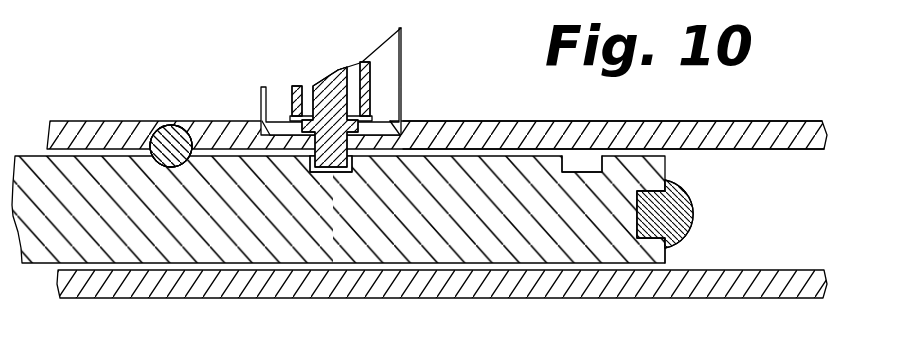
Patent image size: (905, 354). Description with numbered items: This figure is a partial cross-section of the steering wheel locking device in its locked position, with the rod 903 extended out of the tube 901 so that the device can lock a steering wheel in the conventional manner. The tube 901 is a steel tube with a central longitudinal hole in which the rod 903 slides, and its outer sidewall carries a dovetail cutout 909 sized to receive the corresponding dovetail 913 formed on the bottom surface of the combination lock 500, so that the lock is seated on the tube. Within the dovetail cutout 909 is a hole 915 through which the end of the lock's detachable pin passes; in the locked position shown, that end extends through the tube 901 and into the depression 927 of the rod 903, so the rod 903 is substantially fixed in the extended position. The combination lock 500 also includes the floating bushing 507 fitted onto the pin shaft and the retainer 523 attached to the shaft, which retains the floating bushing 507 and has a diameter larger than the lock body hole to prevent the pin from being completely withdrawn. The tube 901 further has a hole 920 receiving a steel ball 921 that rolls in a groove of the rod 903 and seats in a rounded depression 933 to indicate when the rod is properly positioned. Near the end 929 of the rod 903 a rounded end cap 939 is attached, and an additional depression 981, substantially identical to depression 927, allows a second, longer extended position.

The combination lock 500 is at (402, 62).
The floating bushing 507 is at (292, 126).
The retainer 523 is at (366, 62).
The tube 901 is at (559, 148).
The rod 903 is at (30, 263).
The dovetail cutout 909 is at (410, 138).
The dovetail 913 is at (387, 114).
The hole 915 is at (283, 125).
The hole 920 is at (186, 124).
The steel ball 921 is at (168, 125).
The depression 927 is at (312, 172).
The end 929 is at (337, 166).
The depression 933 is at (178, 167).
The end cap 939 is at (695, 212).
The depression 981 is at (557, 172).